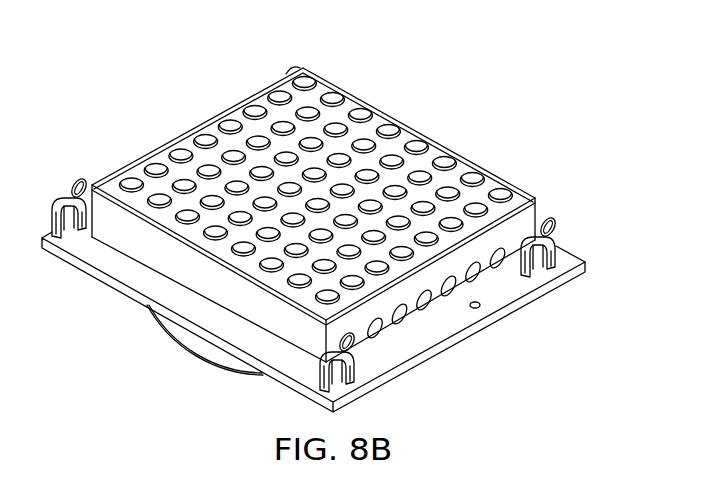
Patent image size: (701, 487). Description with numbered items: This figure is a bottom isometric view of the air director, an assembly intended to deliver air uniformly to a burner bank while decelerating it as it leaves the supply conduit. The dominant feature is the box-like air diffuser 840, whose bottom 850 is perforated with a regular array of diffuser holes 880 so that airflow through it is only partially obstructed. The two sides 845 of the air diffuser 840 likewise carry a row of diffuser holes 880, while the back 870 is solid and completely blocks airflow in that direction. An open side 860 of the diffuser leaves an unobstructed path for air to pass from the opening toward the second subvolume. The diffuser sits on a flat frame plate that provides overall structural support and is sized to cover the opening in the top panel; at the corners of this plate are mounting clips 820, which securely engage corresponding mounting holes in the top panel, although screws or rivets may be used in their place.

The mounting clips 820 is at (556, 255).
The air diffuser 840 is at (303, 67).
The sides 845 is at (526, 222).
The bottom 850 is at (212, 128).
The open side 860 is at (490, 167).
The back 870 is at (135, 247).
The diffuser holes 880 is at (438, 161).